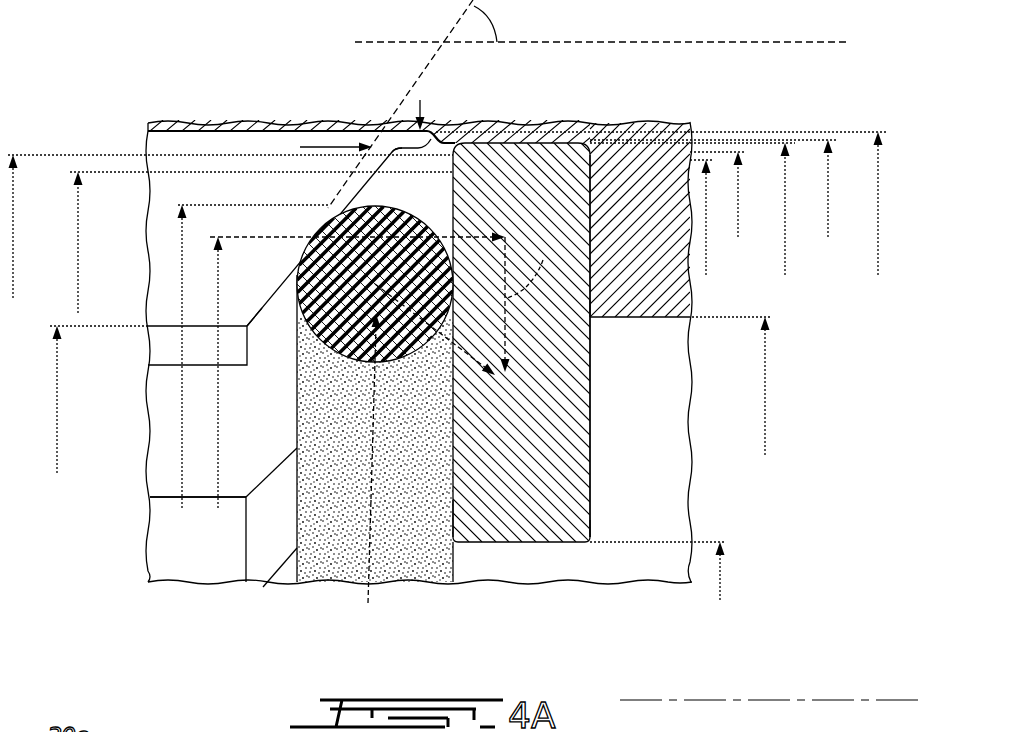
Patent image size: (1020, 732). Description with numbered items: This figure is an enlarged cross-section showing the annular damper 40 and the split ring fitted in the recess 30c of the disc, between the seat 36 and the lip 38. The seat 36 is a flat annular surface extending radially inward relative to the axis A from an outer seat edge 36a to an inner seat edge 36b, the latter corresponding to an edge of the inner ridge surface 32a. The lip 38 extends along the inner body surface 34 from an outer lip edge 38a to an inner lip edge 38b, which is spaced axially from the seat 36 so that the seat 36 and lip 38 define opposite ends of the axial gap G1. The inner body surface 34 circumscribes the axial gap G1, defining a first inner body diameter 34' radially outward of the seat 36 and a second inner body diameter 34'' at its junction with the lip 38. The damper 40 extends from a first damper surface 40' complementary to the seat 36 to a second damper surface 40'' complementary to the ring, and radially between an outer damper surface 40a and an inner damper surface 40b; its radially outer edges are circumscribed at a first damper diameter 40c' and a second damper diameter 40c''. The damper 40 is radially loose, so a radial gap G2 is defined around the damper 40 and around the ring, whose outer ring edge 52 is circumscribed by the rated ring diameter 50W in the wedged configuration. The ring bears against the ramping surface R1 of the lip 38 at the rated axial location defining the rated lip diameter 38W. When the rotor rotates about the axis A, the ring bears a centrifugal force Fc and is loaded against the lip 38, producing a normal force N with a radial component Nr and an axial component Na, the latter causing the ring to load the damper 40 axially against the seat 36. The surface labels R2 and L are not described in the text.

The recess 30c is at (137, 131).
The inner ridge surface 32a is at (675, 321).
The inner body surface 34 is at (404, 200).
The first inner body diameter 34' is at (728, 190).
The second inner body diameter 34'' is at (679, 204).
The seat 36 is at (593, 362).
The outer seat edge 36a is at (737, 196).
The inner seat edge 36b is at (753, 390).
The lip 38 is at (150, 348).
The outer lip edge 38a is at (230, 229).
The inner lip edge 38b is at (99, 404).
The rated lip diameter 38W is at (203, 492).
The damper 40 is at (521, 392).
The first damper surface 40' is at (607, 580).
The second damper surface 40'' is at (431, 570).
The outer damper surface 40a is at (711, 209).
The inner damper surface 40b is at (680, 578).
The first damper diameter 40c' is at (722, 218).
The second damper diameter 40c'' is at (261, 340).
The rated ring diameter 50W is at (173, 485).
The outer ring edge 52 is at (382, 205).
The ramping surface R1 is at (272, 334).
The seat corner radius R2 is at (325, 215).
The axial gap G1 is at (327, 147).
The radial gap G2 is at (436, 108).
The normal force N is at (300, 258).
The axial force component Na is at (407, 268).
The radial force component Nr is at (526, 304).
The centrifugal force Fc is at (366, 480).
The flange length L is at (568, 187).
The axis A is at (827, 698).